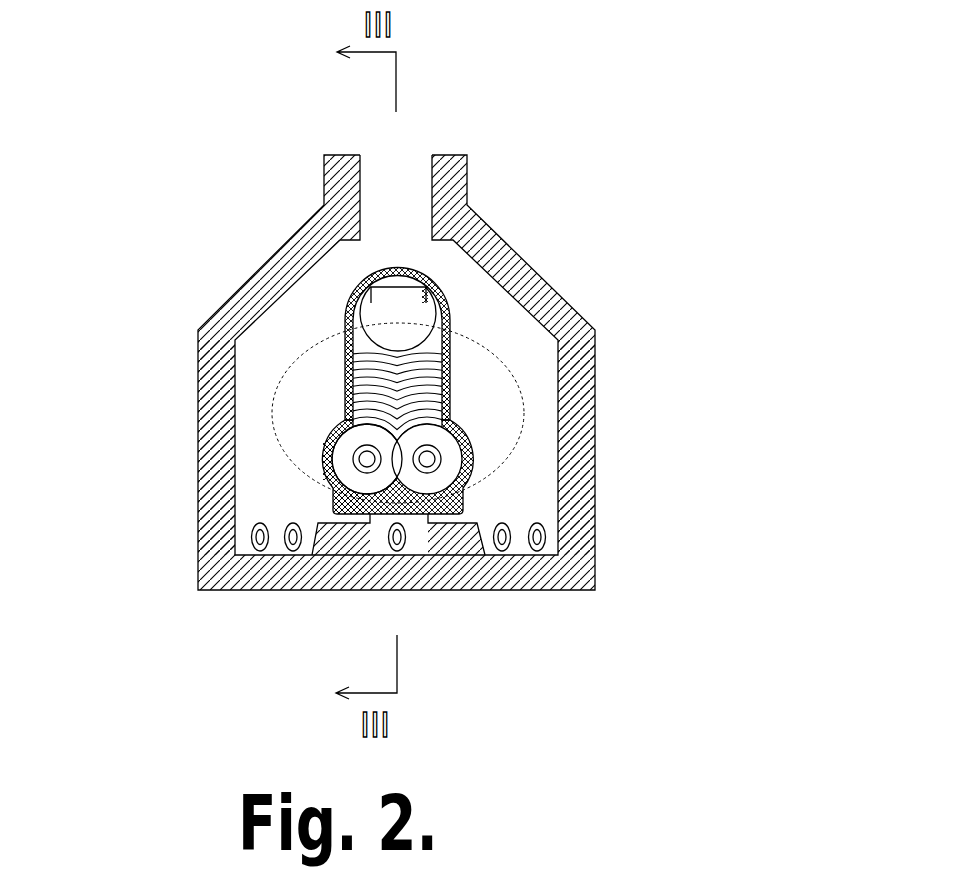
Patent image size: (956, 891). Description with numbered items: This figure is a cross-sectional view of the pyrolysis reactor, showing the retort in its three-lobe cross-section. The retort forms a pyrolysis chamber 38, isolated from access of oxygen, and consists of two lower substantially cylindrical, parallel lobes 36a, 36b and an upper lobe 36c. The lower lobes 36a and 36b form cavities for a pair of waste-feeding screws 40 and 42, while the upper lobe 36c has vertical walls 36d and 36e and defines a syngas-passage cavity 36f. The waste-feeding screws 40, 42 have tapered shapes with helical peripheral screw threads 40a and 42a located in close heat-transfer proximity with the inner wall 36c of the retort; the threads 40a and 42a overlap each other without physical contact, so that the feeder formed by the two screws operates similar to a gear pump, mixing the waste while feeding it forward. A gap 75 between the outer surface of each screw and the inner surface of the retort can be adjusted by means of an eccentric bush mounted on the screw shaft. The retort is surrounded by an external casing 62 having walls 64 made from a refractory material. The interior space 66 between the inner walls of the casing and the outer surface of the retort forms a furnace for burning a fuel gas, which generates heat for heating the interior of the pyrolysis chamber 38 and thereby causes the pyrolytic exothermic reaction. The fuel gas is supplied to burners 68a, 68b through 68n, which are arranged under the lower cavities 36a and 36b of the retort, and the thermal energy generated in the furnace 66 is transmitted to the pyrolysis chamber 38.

The lower lobe 36a is at (348, 482).
The lower lobe 36b is at (460, 485).
The upper lobe 36c is at (423, 287).
The vertical wall 36d is at (445, 357).
The vertical wall 36e is at (353, 353).
The syngas-passage cavity 36f is at (398, 320).
The pyrolysis chamber 38 is at (433, 345).
The waste-feeding screw 40 is at (383, 395).
The screw thread 40a is at (355, 477).
The waste-feeding screw 42 is at (423, 382).
The screw thread 42a is at (448, 445).
The external casing 62 is at (217, 335).
The walls 64 is at (578, 450).
The interior space 66 is at (255, 403).
The burner 68a is at (543, 537).
The burner 68b is at (256, 541).
The burner 68n is at (291, 541).
The gap 75 is at (327, 474).